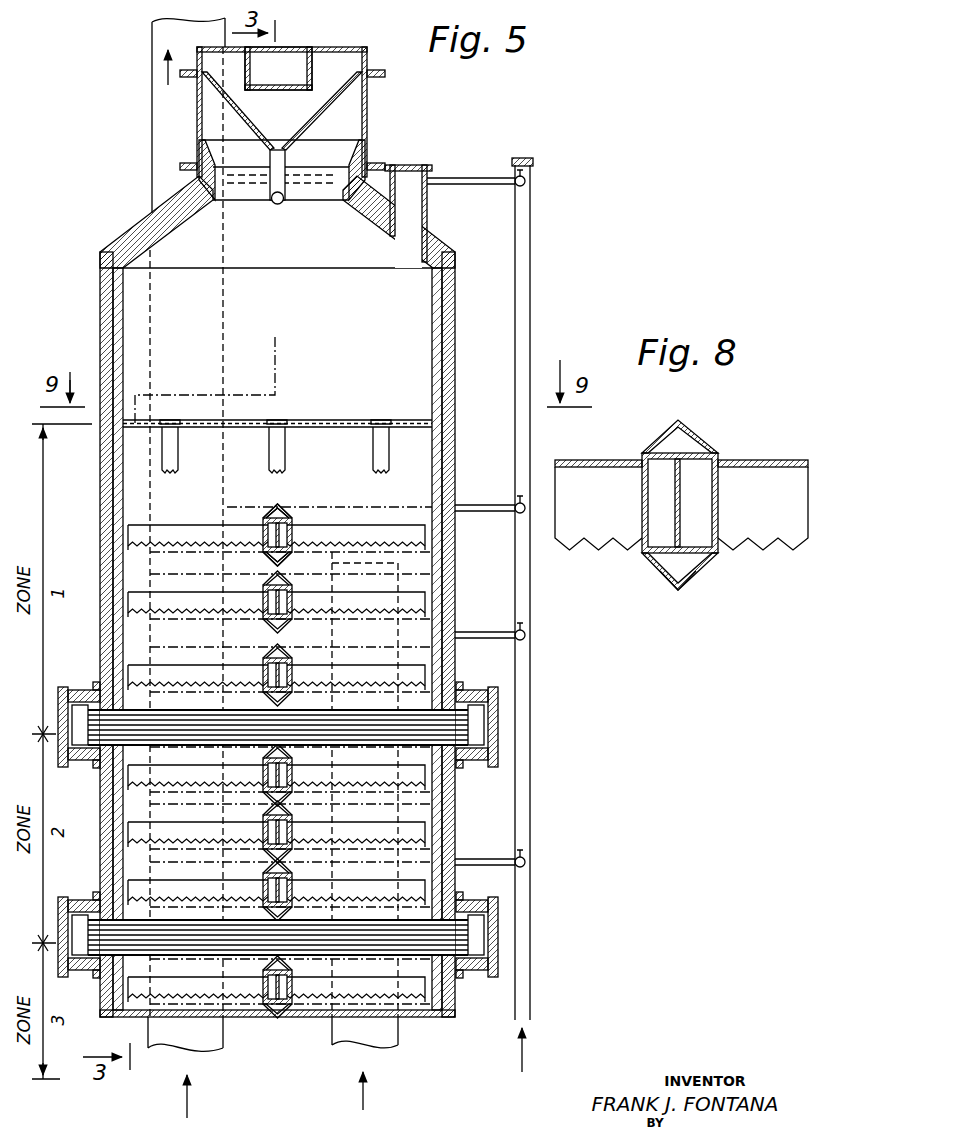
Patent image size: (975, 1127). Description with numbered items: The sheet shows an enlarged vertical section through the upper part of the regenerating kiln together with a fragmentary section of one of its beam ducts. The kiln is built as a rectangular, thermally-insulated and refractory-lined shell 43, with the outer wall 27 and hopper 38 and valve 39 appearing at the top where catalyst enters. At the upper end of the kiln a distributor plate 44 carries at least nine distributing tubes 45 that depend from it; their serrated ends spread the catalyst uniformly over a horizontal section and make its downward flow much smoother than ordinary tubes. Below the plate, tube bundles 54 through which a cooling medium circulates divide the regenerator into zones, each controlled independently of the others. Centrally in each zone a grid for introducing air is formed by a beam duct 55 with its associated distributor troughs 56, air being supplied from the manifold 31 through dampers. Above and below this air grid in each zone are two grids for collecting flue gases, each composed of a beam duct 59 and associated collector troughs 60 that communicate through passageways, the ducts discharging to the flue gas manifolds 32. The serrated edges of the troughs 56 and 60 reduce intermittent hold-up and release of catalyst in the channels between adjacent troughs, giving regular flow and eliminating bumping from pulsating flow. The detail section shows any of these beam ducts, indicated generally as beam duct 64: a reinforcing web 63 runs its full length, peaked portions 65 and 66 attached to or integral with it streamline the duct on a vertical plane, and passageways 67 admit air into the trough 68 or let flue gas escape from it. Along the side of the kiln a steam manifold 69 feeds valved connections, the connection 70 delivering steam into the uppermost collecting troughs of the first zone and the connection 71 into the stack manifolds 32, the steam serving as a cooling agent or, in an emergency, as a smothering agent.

In FIG. 5, the outer shell 27 is at (456, 312).
In FIG. 5, the air manifold 31 is at (383, 1038).
In FIG. 5, the flue gas manifold 32 is at (160, 118).
In FIG. 5, the feed hopper 38 is at (321, 53).
In FIG. 5, the feed valve 39 is at (272, 206).
In FIG. 5, the shell 43 is at (436, 356).
In FIG. 5, the distributor plate 44 is at (335, 420).
In FIG. 5, the distributing tubes 45 is at (178, 468).
In FIG. 5, the tube bundles 54 is at (422, 710).
In FIG. 5, the beam duct 55 is at (303, 596).
In FIG. 5, the distributor troughs 56 is at (188, 600).
In FIG. 5, the beam duct 59 is at (285, 770).
In FIG. 5, the collector troughs 60 is at (197, 530).
In FIG. 8, the reinforcing web 63 is at (682, 537).
In FIG. 8, the beam duct 64 is at (710, 563).
In FIG. 5, the peaked portion 65 is at (272, 514).
In FIG. 8, the peaked portion 65 is at (705, 450).
In FIG. 5, the peaked portion 66 is at (270, 562).
In FIG. 8, the peaked portion 66 is at (687, 588).
In FIG. 8, the passageways 67 is at (640, 502).
In FIG. 8, the trough 68 is at (760, 466).
In FIG. 5, the steam manifold 69 is at (532, 272).
In FIG. 5, the valved connection 70 is at (477, 506).
In FIG. 5, the valved connection 71 is at (460, 178).